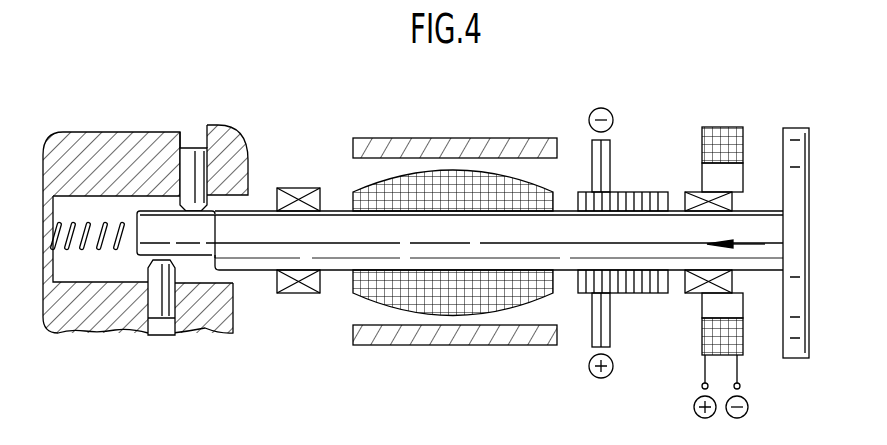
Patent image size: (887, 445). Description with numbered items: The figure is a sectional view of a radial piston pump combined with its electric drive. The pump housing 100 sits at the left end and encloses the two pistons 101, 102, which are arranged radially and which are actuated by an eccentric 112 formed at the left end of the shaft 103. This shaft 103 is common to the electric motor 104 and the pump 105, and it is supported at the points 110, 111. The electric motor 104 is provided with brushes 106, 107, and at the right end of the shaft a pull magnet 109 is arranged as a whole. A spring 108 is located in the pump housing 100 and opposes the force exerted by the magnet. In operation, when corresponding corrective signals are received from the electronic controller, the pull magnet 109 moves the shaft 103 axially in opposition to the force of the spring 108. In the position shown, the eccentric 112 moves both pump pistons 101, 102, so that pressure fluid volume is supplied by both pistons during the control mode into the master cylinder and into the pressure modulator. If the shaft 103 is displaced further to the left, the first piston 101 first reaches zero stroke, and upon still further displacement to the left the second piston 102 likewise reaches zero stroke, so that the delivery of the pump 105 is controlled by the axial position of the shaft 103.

The pump housing 100 is at (152, 155).
The first piston 101 is at (200, 163).
The second piston 102 is at (160, 318).
The shaft 103 is at (565, 225).
The electric motor 104 is at (468, 138).
The pump 105 is at (98, 132).
The brush 106 is at (605, 160).
The brush 107 is at (605, 330).
The spring 108 is at (98, 252).
The pull magnet 109 is at (764, 122).
The support point 110 is at (300, 188).
The support point 111 is at (700, 192).
The eccentric 112 is at (192, 246).